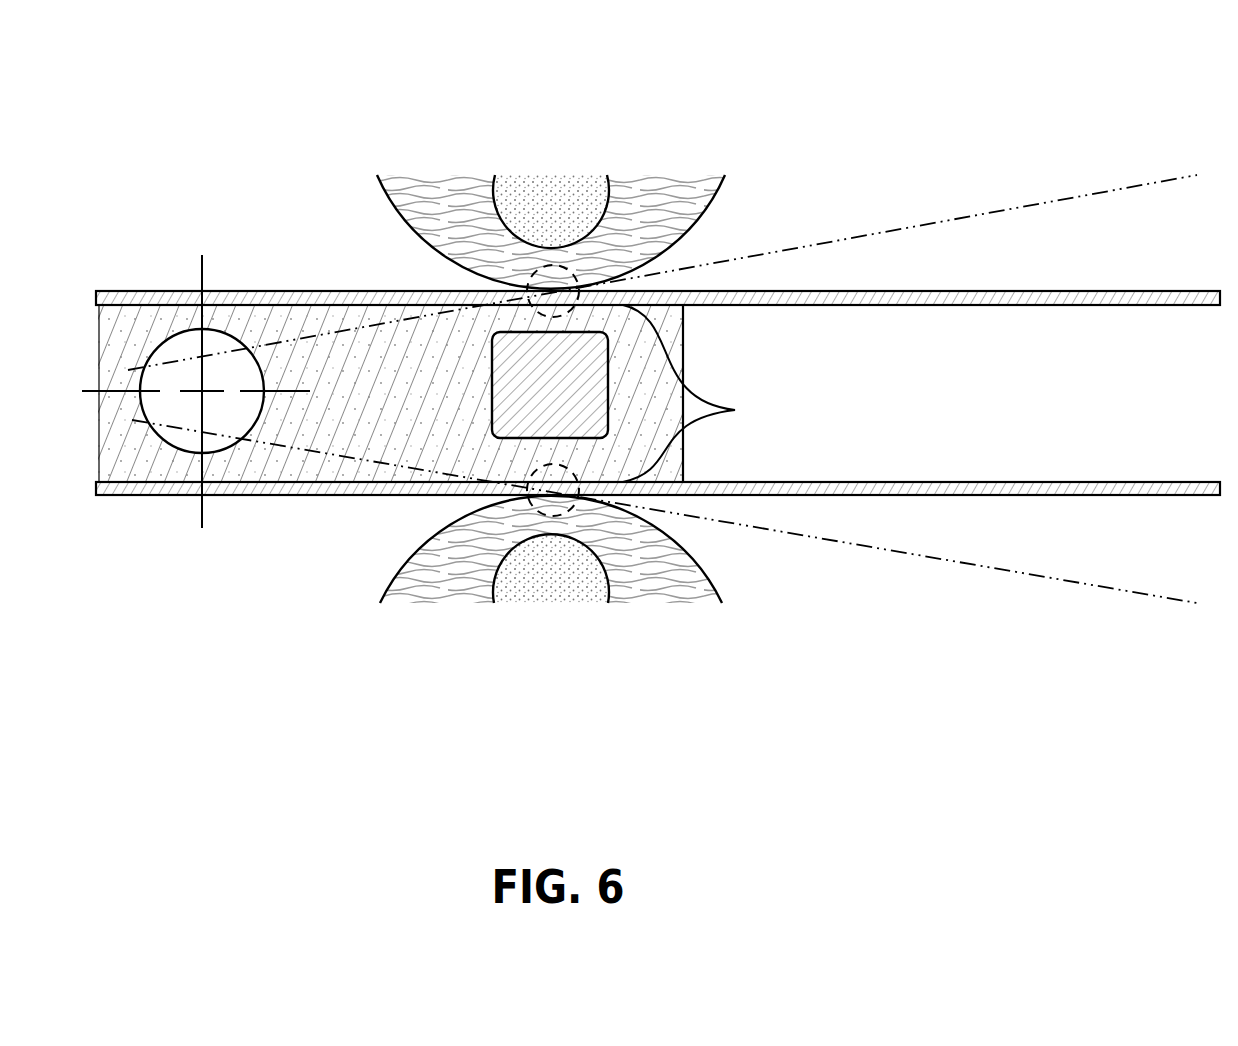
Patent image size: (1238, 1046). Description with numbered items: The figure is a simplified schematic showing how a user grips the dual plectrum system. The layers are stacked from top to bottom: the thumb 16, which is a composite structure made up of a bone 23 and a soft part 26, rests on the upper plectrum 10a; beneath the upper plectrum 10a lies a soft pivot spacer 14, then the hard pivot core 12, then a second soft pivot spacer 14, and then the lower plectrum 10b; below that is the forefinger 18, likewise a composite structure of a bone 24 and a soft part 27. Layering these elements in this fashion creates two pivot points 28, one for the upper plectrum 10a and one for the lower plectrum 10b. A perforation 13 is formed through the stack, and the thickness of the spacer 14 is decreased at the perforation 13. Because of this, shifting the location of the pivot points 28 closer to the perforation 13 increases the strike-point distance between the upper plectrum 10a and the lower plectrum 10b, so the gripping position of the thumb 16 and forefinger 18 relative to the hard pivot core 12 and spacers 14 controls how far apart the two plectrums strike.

The upper plectrum 10a is at (853, 305).
The lower plectrum 10b is at (1187, 480).
The hard pivot core 12 is at (515, 382).
The perforation 13 is at (178, 350).
The soft pivot spacer 14 is at (380, 425).
The thumb 16 is at (571, 153).
The forefinger 18 is at (606, 620).
The bone 23 is at (543, 195).
The bone 24 is at (563, 597).
The soft part 26 is at (438, 183).
The soft part 27 is at (452, 588).
The pivot points 28 is at (735, 410).